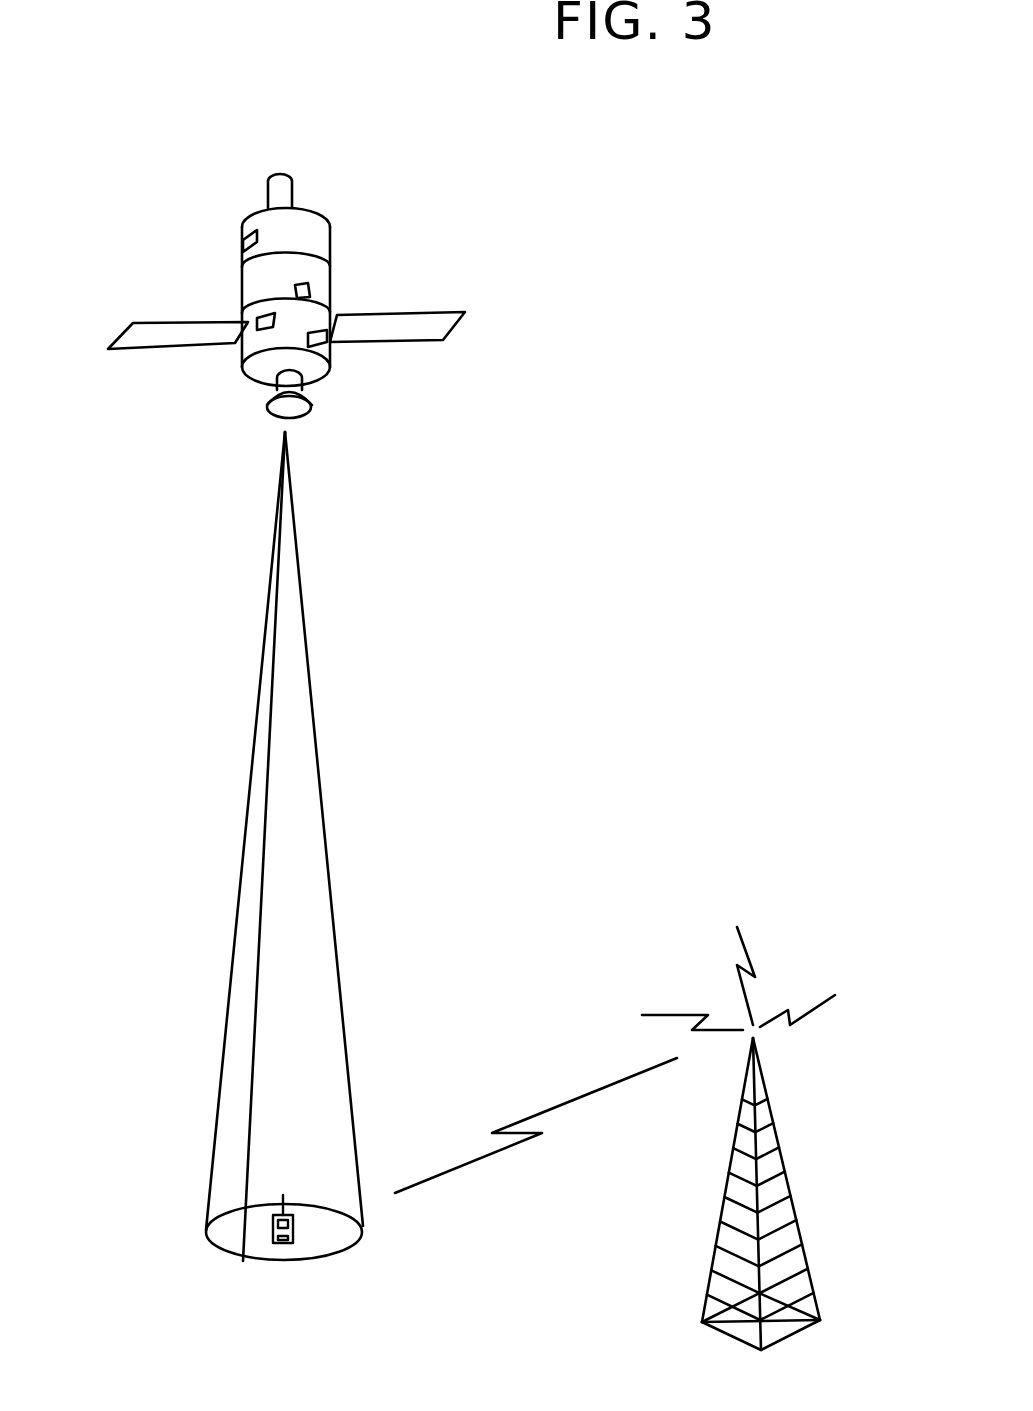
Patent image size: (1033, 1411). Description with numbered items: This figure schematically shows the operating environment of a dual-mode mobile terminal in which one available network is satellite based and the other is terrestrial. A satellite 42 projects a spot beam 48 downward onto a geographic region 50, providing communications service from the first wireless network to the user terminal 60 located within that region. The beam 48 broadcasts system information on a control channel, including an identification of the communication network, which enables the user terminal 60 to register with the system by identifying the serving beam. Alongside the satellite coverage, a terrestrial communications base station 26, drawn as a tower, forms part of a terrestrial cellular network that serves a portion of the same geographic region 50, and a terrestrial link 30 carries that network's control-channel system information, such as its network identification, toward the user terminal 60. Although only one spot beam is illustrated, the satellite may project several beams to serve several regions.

The satellite 42 is at (362, 292).
The spot beam 48 is at (220, 1085).
The geographic region 50 is at (206, 1232).
The user terminal 60 is at (310, 1228).
The terrestrial communication link 30 is at (560, 1092).
The terrestrial communications base station 26 is at (810, 1139).